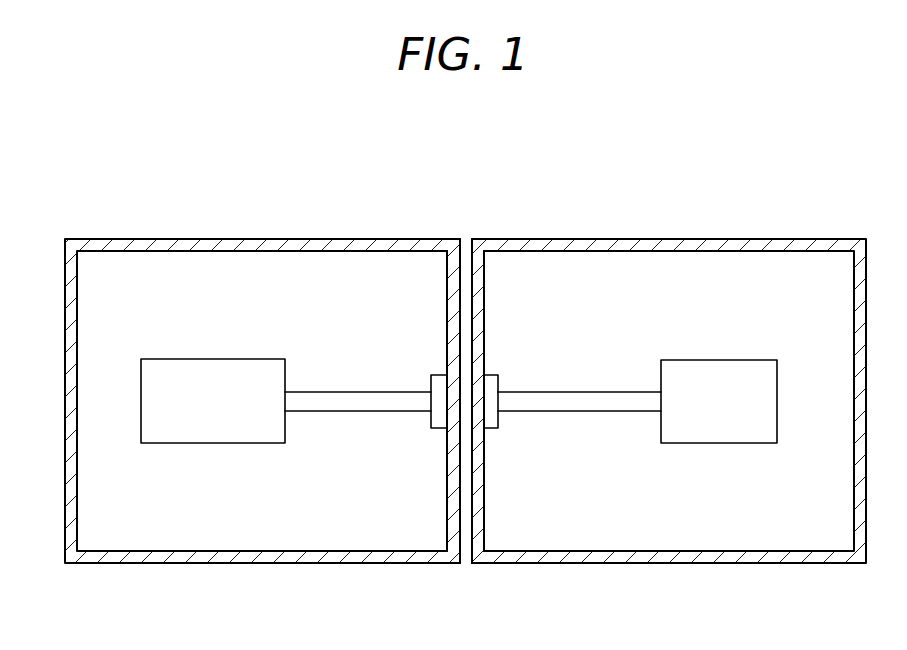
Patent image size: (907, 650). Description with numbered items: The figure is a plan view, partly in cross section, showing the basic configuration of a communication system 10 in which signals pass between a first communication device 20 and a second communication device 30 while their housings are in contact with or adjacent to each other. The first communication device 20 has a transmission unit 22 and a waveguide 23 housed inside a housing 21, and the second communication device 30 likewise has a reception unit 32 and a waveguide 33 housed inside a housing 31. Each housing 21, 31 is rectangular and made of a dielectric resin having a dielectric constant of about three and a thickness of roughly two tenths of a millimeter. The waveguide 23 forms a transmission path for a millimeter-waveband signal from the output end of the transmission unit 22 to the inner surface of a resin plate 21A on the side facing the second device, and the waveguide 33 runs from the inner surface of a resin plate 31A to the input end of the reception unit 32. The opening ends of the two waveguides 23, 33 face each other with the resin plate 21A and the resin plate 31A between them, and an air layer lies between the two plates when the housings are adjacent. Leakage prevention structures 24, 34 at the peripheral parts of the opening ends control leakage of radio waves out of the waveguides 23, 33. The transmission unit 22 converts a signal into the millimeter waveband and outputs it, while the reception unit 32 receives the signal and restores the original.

The communication system 10 is at (566, 172).
The first communication device 20 is at (274, 565).
The housing 21 is at (260, 239).
The resin plate 21A is at (452, 484).
The transmission unit 22 is at (208, 360).
The waveguide 23 is at (325, 392).
The leakage prevention structure 24 is at (431, 375).
The second communication device 30 is at (674, 565).
The housing 31 is at (668, 239).
The resin plate 31A is at (480, 484).
The reception unit 32 is at (713, 365).
The waveguide 33 is at (603, 392).
The leakage prevention structure 34 is at (498, 375).